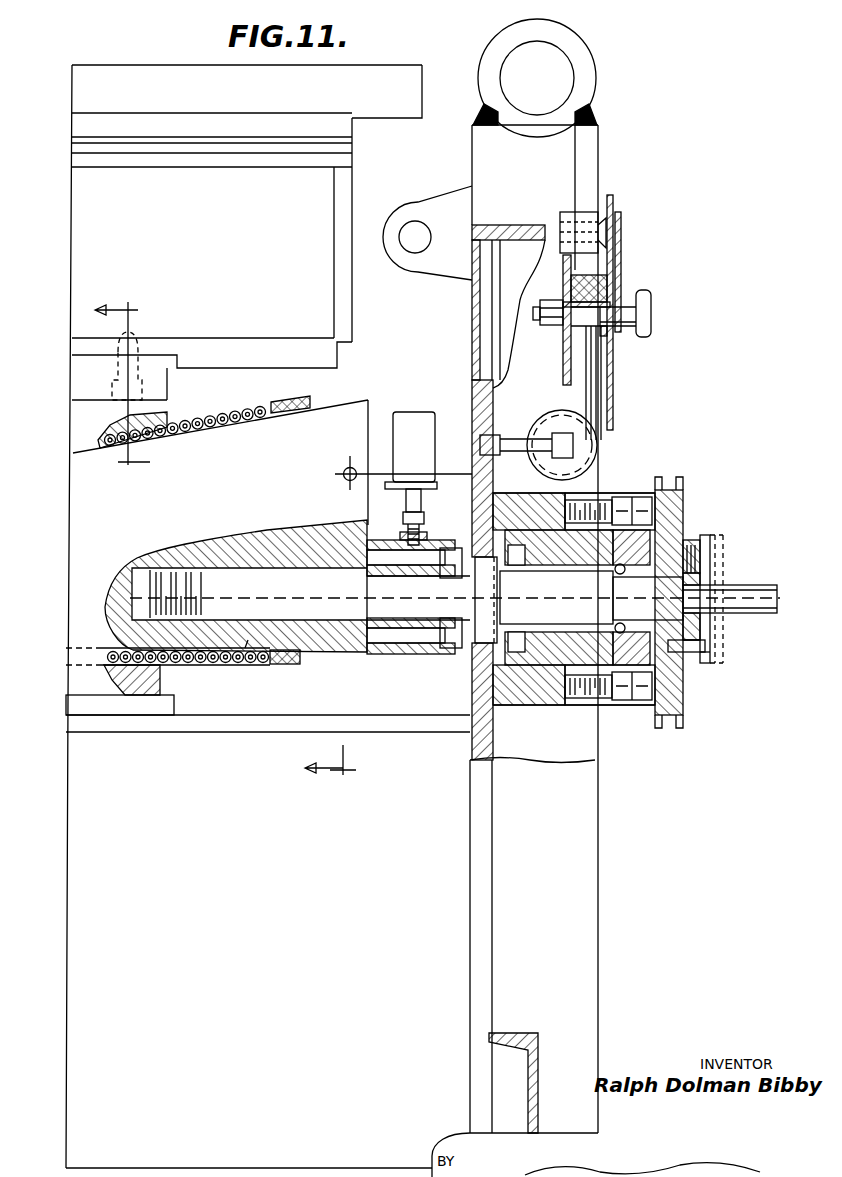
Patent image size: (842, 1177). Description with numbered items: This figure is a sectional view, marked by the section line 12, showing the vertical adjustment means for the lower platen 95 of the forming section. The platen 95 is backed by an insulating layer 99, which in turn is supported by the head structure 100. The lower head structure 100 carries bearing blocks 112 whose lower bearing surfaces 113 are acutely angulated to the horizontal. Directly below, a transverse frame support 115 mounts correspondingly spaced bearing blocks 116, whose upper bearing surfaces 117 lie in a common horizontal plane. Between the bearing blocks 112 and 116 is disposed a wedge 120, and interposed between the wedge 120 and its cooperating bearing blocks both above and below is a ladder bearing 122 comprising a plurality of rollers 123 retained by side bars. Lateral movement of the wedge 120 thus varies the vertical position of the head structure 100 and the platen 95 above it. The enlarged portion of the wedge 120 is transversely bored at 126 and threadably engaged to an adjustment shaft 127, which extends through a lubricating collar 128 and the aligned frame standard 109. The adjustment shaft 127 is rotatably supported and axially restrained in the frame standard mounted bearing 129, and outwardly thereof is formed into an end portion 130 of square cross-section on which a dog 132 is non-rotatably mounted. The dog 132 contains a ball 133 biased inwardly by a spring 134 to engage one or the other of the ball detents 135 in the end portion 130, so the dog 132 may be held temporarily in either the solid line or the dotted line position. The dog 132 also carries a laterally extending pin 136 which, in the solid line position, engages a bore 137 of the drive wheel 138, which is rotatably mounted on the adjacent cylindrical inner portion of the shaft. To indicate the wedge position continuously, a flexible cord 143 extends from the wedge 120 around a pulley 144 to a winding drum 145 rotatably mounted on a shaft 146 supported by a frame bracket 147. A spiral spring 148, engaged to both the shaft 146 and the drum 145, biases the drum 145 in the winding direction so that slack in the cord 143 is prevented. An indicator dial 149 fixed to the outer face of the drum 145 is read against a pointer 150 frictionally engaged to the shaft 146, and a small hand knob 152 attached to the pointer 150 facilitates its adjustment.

The section line 12 is at (224, 536).
The platen 95 is at (378, 72).
The insulating layer 99 is at (72, 128).
The head structure 100 is at (72, 216).
The frame standard 109 is at (488, 892).
The bearing block 112 is at (165, 412).
The bearing surface 113 is at (152, 418).
The transverse frame support 115 is at (316, 672).
The bearing block 116 is at (160, 692).
The bearing surface 117 is at (160, 676).
The wedge 120 is at (256, 508).
The ladder bearing 122 is at (320, 402).
The roller 123 is at (248, 408).
The transverse bore 126 is at (228, 648).
The adjustment shaft 127 is at (262, 645).
The lubricating collar 128 is at (412, 656).
The bearing 129 is at (552, 707).
The end portion 130 is at (760, 585).
The dog 132 is at (695, 660).
The ball 133 is at (710, 570).
The spring 134 is at (692, 540).
The ball detent 135 is at (700, 585).
The pin 136 is at (705, 644).
The bore 137 is at (710, 650).
The drive wheel 138 is at (683, 514).
The cord 143 is at (452, 472).
The pulley 144 is at (597, 445).
The winding drum 145 is at (608, 282).
The shaft 146 is at (626, 312).
The frame bracket 147 is at (562, 276).
The spiral spring 148 is at (560, 292).
The indicator dial 149 is at (613, 205).
The pointer 150 is at (621, 250).
The hand knob 152 is at (644, 336).